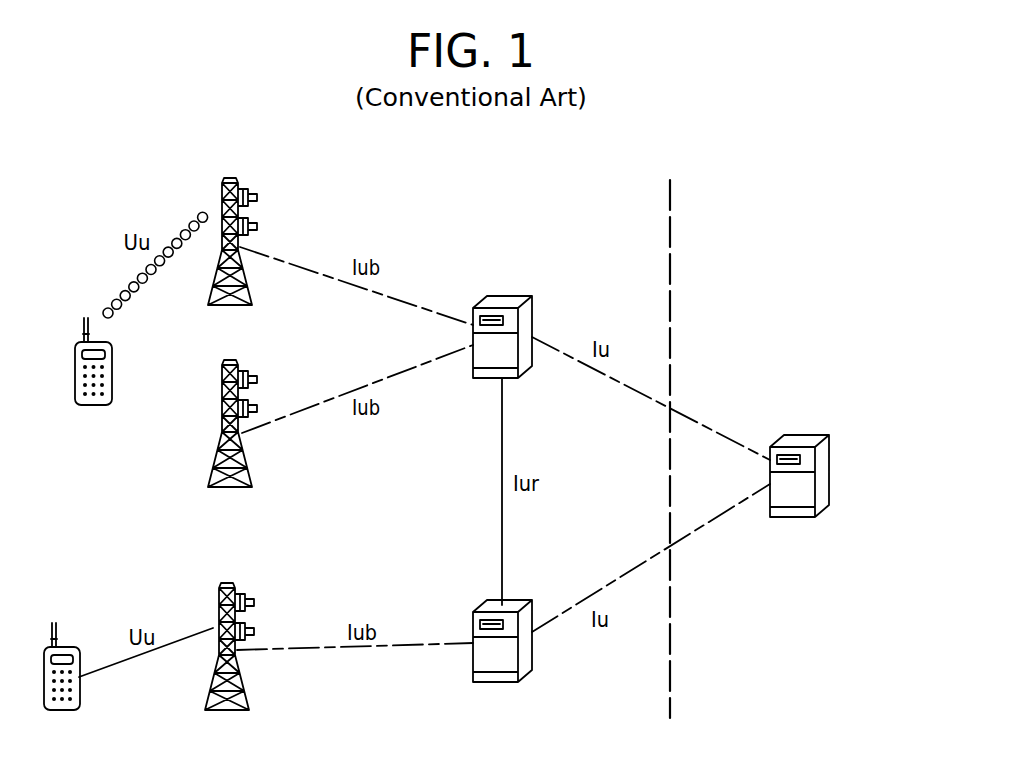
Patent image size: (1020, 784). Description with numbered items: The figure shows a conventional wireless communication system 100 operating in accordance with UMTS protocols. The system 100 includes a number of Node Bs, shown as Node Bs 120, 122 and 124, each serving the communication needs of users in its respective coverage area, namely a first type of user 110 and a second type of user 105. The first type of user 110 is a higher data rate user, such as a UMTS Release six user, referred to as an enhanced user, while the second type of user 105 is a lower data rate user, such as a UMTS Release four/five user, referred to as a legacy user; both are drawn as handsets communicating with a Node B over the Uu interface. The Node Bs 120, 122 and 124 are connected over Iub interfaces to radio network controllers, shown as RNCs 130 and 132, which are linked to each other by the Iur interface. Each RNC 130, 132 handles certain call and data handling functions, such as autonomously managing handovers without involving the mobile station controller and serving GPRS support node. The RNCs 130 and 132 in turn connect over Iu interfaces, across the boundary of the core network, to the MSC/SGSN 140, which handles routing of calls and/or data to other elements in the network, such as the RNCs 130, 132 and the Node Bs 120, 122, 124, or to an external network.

The wireless communication system 100 is at (430, 190).
The second type of user 105 is at (112, 365).
The first type of user 110 is at (78, 640).
The Node B 120 is at (258, 178).
The Node B 122 is at (270, 363).
The Node B 124 is at (261, 578).
The RNC 130 is at (533, 313).
The RNC 132 is at (516, 600).
The MSC/SGSN 140 is at (803, 433).